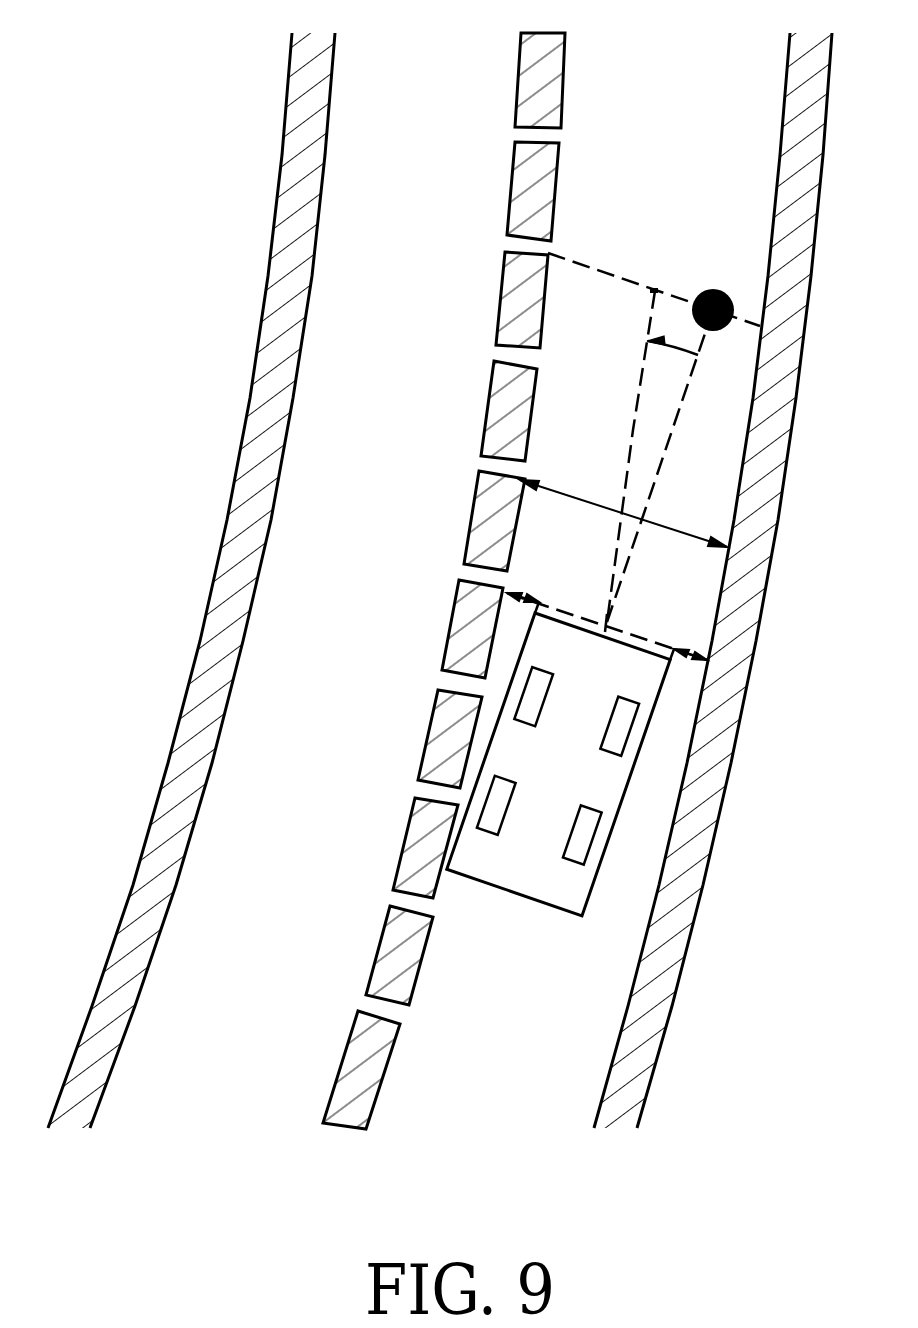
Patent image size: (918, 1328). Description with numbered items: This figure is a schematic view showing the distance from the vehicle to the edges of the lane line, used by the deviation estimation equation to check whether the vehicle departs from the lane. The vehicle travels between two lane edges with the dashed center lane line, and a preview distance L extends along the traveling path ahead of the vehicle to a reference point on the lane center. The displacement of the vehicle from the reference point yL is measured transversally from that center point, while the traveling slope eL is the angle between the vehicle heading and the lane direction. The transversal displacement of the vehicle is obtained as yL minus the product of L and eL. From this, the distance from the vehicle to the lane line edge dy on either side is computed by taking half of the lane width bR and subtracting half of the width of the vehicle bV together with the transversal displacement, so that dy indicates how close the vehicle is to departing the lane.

The displacement of the vehicle from the reference point yL is at (695, 286).
The traveling slope eL is at (672, 357).
The lane width bR is at (607, 469).
The preview distance L is at (623, 513).
The distance from the vehicle to the lane line edge dy is at (610, 602).
The width of the vehicle bV is at (558, 764).